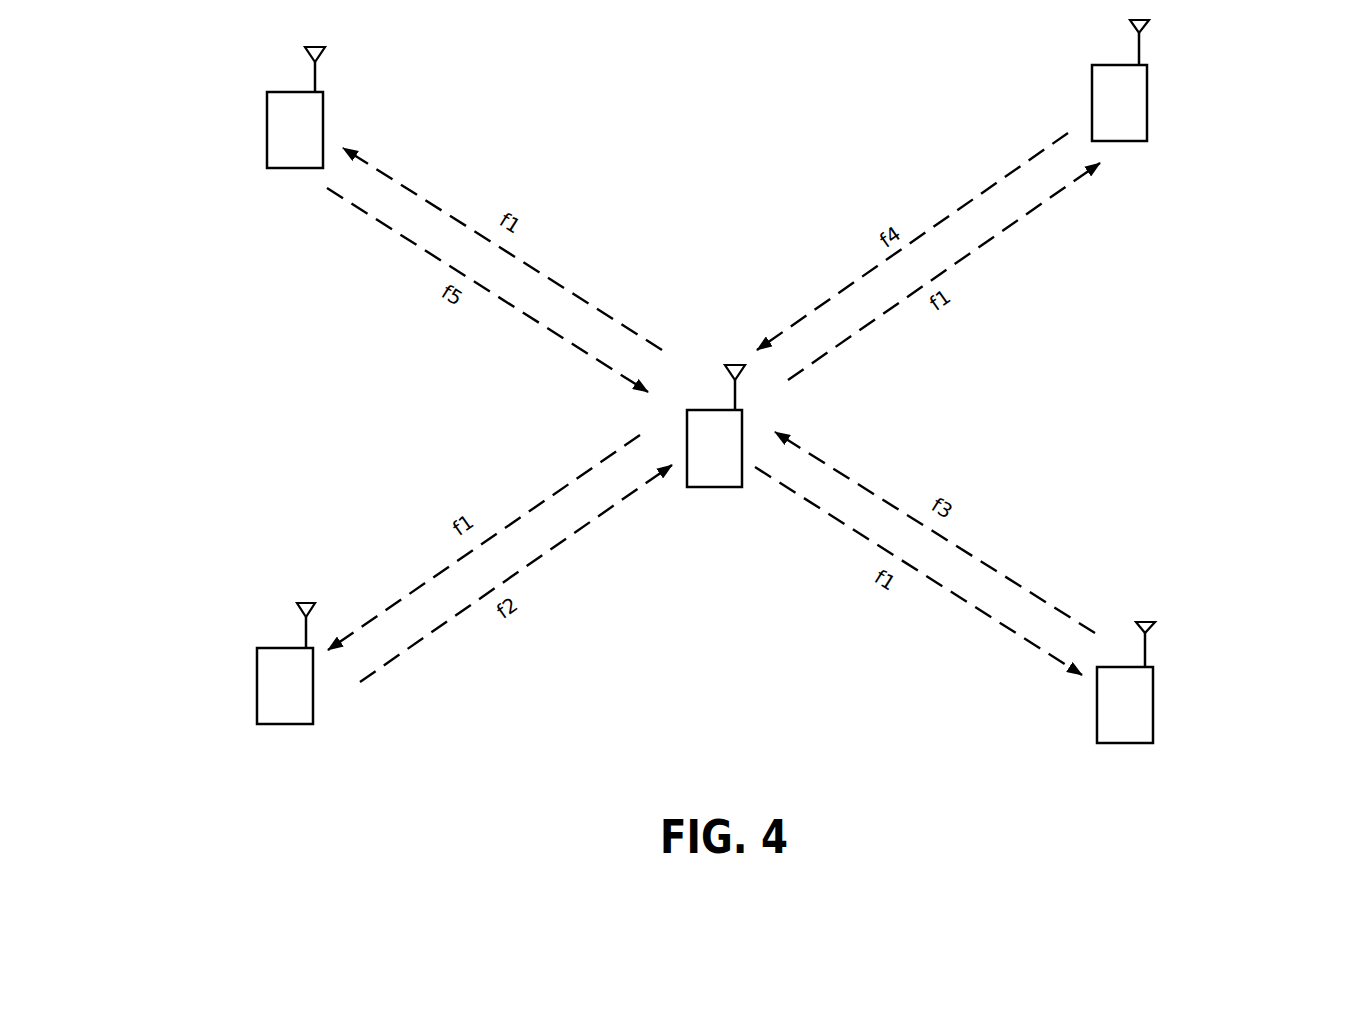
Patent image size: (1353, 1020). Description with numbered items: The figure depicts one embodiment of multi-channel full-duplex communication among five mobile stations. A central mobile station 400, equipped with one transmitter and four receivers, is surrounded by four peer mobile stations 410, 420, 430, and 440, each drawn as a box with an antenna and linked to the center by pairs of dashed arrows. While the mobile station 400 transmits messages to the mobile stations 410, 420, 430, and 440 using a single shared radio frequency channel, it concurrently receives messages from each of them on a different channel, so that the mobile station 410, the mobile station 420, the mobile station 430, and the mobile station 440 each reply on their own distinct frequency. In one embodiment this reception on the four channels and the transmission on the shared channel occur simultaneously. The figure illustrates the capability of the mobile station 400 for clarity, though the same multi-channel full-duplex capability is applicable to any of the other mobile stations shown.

The mobile station 400 is at (695, 572).
The mobile station 410 is at (242, 719).
The mobile station 420 is at (1217, 789).
The mobile station 430 is at (1344, 136).
The mobile station 440 is at (252, 164).